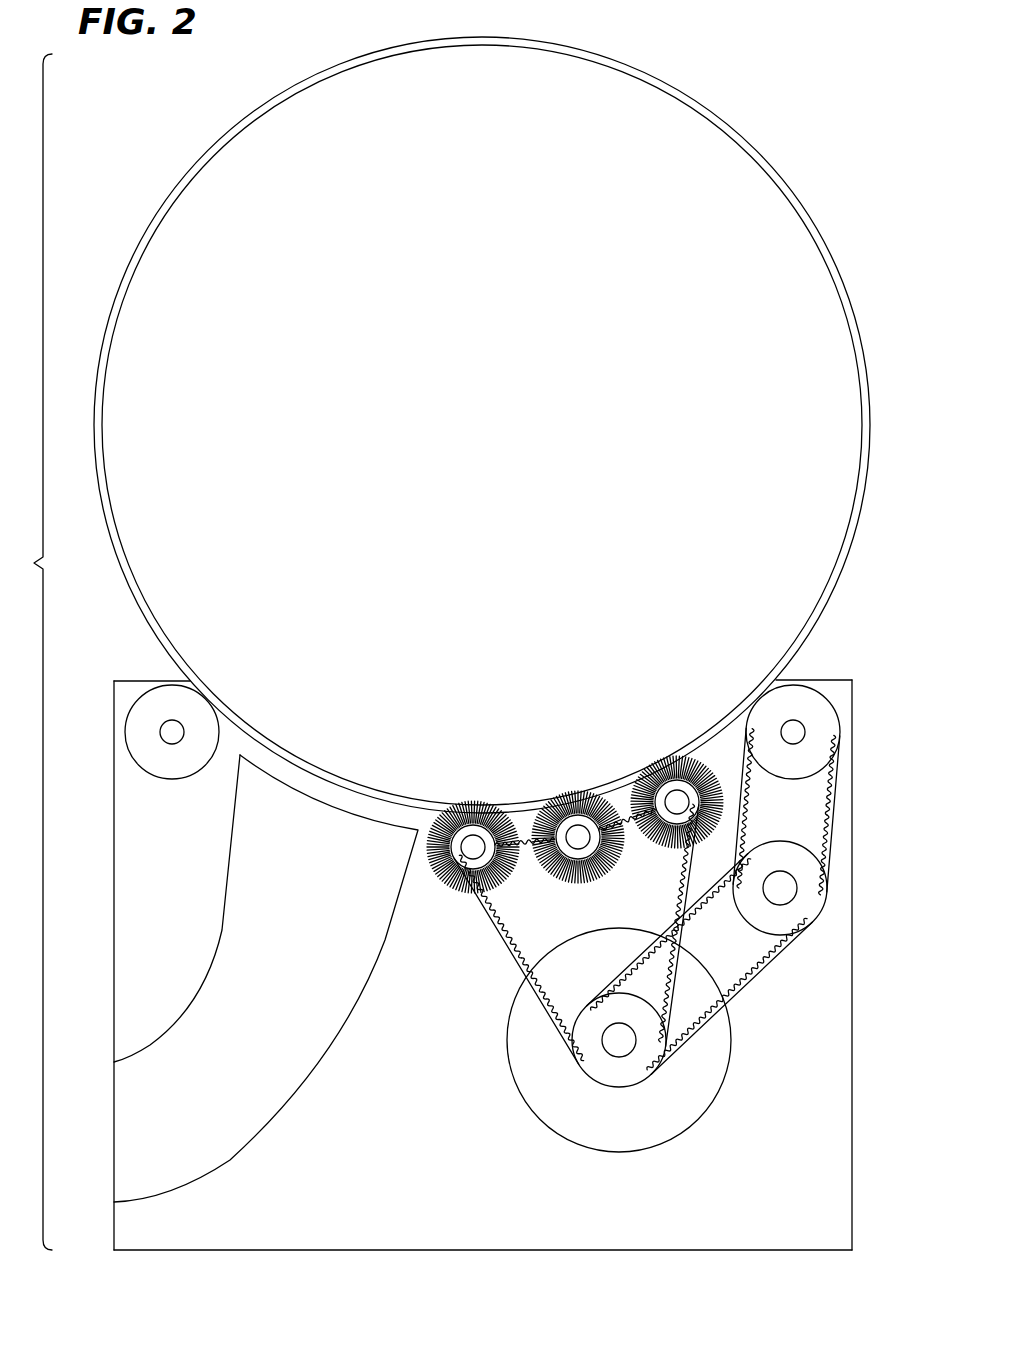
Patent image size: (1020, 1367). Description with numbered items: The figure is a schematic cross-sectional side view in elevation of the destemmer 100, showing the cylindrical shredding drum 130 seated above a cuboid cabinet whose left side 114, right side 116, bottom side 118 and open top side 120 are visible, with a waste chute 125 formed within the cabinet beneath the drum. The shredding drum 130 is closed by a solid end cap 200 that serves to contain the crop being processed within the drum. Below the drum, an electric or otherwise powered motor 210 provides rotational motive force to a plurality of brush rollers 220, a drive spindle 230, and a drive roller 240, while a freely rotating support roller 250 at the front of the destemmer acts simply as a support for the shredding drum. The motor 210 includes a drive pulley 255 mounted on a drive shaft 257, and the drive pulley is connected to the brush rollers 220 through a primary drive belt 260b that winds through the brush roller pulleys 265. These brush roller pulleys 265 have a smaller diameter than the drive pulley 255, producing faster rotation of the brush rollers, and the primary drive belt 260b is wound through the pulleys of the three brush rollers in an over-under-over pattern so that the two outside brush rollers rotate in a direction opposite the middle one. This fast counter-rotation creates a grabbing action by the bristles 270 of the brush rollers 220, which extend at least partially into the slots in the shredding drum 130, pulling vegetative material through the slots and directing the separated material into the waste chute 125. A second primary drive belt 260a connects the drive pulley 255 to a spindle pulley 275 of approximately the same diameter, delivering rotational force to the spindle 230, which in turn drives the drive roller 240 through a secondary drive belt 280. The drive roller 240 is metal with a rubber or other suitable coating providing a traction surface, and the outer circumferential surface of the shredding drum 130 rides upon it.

The destemmer 100 is at (66, 652).
The left side 114 is at (112, 857).
The right side 116 is at (828, 1125).
The bottom side 118 is at (320, 1250).
The top side 120 is at (808, 682).
The waste chute 125 is at (192, 1169).
The shredding drum 130 is at (308, 91).
The end cap 200 is at (237, 173).
The motor 210 is at (636, 1068).
The brush rollers 220 is at (550, 802).
The drive spindle 230 is at (783, 890).
The drive roller 240 is at (805, 730).
The support roller 250 is at (172, 706).
The drive pulley 255 is at (580, 1105).
The drive shaft 257 is at (617, 1042).
The second primary drive belt 260a is at (697, 1033).
The primary drive belt 260b is at (522, 970).
The brush roller pulleys 265 is at (677, 802).
The bristles 270 is at (633, 768).
The spindle pulley 275 is at (826, 888).
The secondary drive belt 280 is at (835, 807).